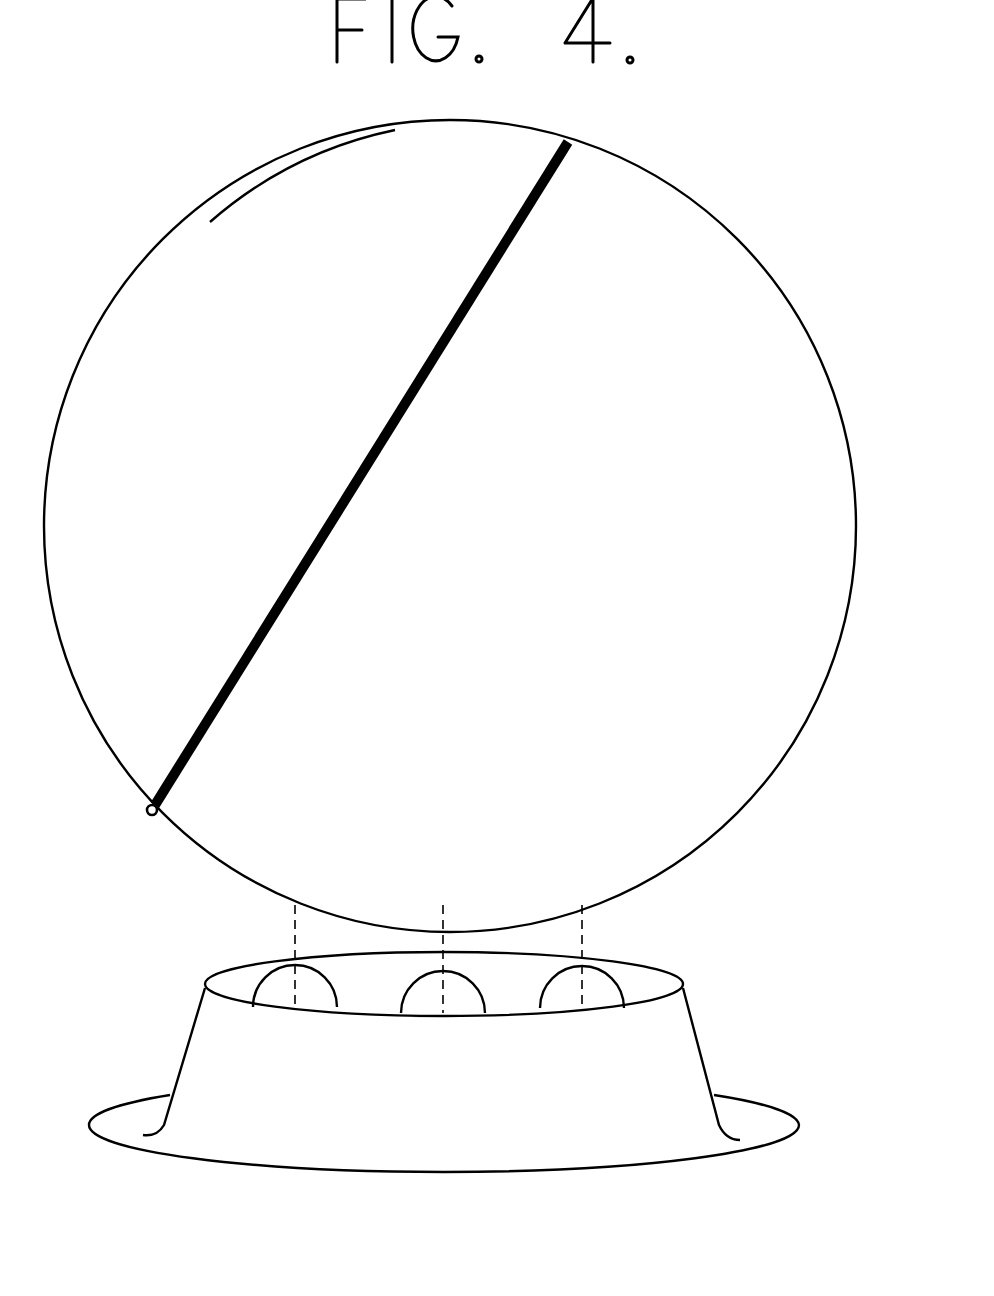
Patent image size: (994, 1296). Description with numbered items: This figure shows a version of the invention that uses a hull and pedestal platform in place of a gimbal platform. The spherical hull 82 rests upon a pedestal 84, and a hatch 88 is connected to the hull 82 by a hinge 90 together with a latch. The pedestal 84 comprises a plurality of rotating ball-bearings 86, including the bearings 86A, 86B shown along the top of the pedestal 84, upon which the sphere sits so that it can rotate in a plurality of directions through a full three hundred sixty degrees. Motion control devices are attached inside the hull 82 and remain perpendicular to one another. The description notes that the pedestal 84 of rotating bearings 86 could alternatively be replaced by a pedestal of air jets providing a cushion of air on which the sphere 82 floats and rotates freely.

The hull 82 is at (770, 274).
The pedestal 84 is at (740, 1106).
The rotating ball-bearing 86 is at (600, 966).
The rotating ball-bearing 86A is at (443, 961).
The rotating ball-bearing 86B is at (296, 961).
The hatch 88 is at (277, 159).
The hinge 90 is at (149, 817).